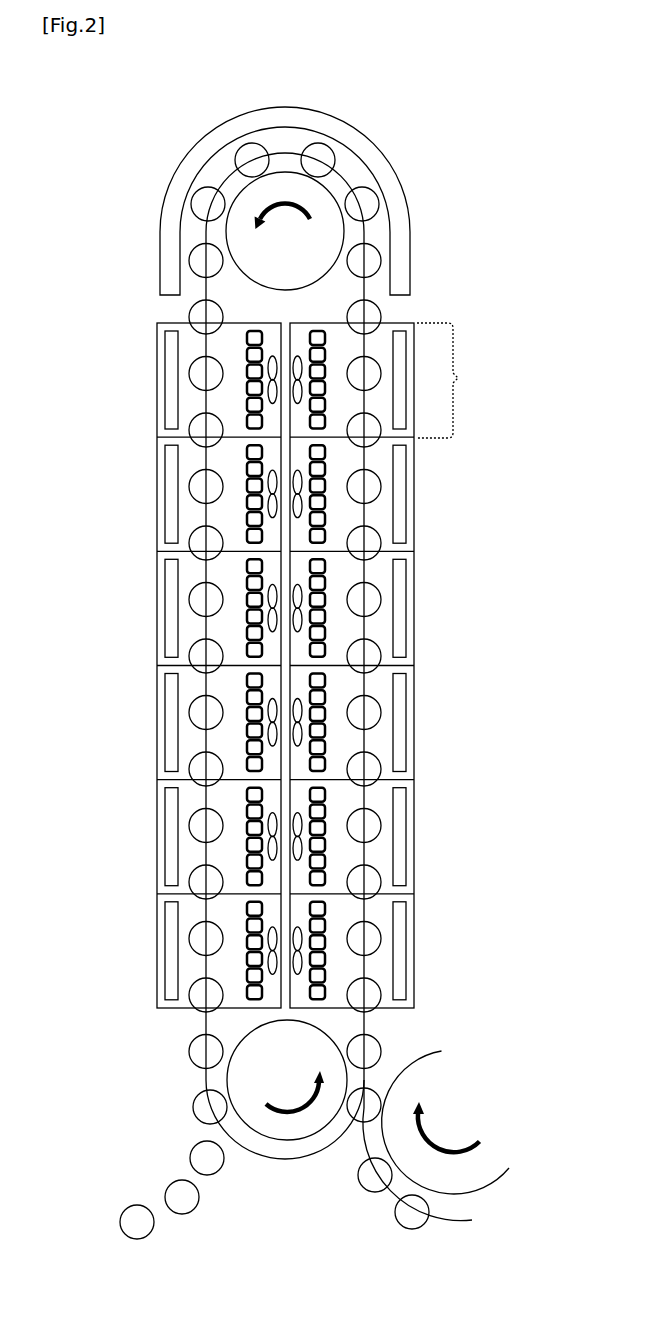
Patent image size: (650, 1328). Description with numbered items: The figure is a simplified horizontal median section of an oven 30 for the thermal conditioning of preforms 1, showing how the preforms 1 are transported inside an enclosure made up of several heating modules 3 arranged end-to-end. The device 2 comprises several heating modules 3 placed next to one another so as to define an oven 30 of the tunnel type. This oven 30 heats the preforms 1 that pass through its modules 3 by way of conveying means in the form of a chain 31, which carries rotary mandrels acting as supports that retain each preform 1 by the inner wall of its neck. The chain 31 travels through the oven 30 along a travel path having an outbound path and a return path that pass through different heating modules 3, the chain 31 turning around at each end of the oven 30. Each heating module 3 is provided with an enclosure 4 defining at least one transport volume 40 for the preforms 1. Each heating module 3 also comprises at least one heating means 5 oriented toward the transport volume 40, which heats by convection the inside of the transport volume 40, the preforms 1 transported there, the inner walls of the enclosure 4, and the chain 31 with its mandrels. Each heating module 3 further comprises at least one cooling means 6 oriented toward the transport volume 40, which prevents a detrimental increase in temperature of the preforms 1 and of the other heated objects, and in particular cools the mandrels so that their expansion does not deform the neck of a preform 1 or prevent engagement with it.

The preform 1 is at (383, 1052).
The device 2 is at (415, 315).
The heating module 3 is at (451, 380).
The enclosure 4 is at (412, 952).
The heating means 5 is at (403, 720).
The cooling means 6 is at (298, 758).
The oven 30 is at (395, 153).
The chain 31 is at (365, 572).
The transport volume 40 is at (380, 917).